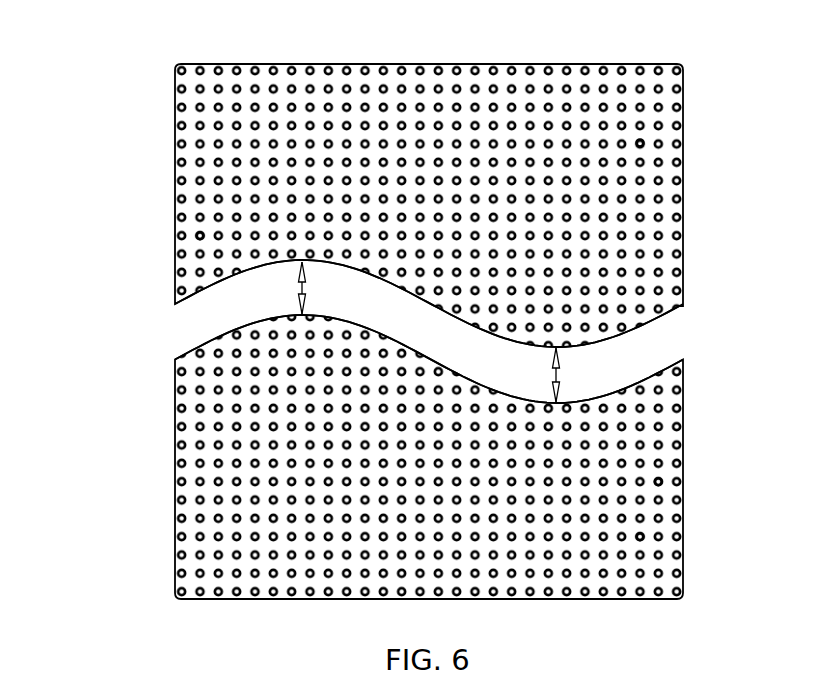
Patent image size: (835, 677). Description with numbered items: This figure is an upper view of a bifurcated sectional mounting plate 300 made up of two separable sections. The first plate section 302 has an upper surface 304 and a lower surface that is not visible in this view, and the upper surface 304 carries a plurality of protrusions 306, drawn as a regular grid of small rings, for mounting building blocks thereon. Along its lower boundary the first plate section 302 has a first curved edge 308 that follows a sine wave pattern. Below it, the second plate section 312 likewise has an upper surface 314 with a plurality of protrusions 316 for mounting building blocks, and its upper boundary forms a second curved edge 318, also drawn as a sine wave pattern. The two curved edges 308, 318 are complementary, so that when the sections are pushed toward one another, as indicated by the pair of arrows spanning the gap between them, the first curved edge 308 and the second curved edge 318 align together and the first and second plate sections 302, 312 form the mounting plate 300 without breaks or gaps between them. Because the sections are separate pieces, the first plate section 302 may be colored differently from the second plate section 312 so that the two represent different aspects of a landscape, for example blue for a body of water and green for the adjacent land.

The bifurcated sectional mounting plate 300 is at (103, 75).
The first plate section 302 is at (218, 180).
The upper surface 304 is at (198, 236).
The plurality of protrusions 306 is at (640, 143).
The first curved edge 308 is at (662, 322).
The second plate section 312 is at (178, 537).
The upper surface 314 is at (658, 483).
The plurality of protrusions 316 is at (640, 538).
The second curved edge 318 is at (198, 340).